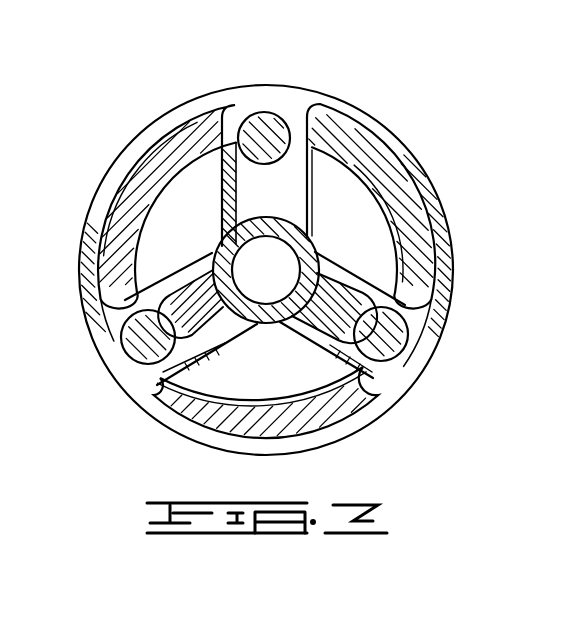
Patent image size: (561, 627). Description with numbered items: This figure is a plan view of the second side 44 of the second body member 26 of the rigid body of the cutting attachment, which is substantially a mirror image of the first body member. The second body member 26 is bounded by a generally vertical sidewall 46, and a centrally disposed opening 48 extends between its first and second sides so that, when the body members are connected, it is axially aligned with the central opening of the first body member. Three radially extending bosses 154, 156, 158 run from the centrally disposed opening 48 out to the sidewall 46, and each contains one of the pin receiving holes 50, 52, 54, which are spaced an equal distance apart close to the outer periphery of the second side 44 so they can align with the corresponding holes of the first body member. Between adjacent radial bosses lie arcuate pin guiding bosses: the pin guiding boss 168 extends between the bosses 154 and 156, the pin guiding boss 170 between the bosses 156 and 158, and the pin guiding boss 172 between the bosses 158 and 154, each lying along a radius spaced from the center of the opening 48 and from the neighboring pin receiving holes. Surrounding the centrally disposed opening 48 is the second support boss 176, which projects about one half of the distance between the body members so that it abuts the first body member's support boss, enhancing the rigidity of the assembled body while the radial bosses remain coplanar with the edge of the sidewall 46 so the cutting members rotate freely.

The second body member 26 is at (332, 68).
The second side 44 is at (178, 233).
The sidewall 46 is at (426, 204).
The centrally disposed opening 48 is at (284, 262).
The pin receiving hole 50 is at (147, 348).
The pin receiving hole 52 is at (267, 136).
The pin receiving hole 54 is at (392, 348).
The radially extending boss 154 is at (135, 292).
The radially extending boss 156 is at (333, 110).
The radially extending boss 158 is at (392, 345).
The pin guiding boss 168 is at (177, 161).
The pin guiding boss 170 is at (371, 134).
The pin guiding boss 172 is at (293, 400).
The second support boss 176 is at (219, 243).